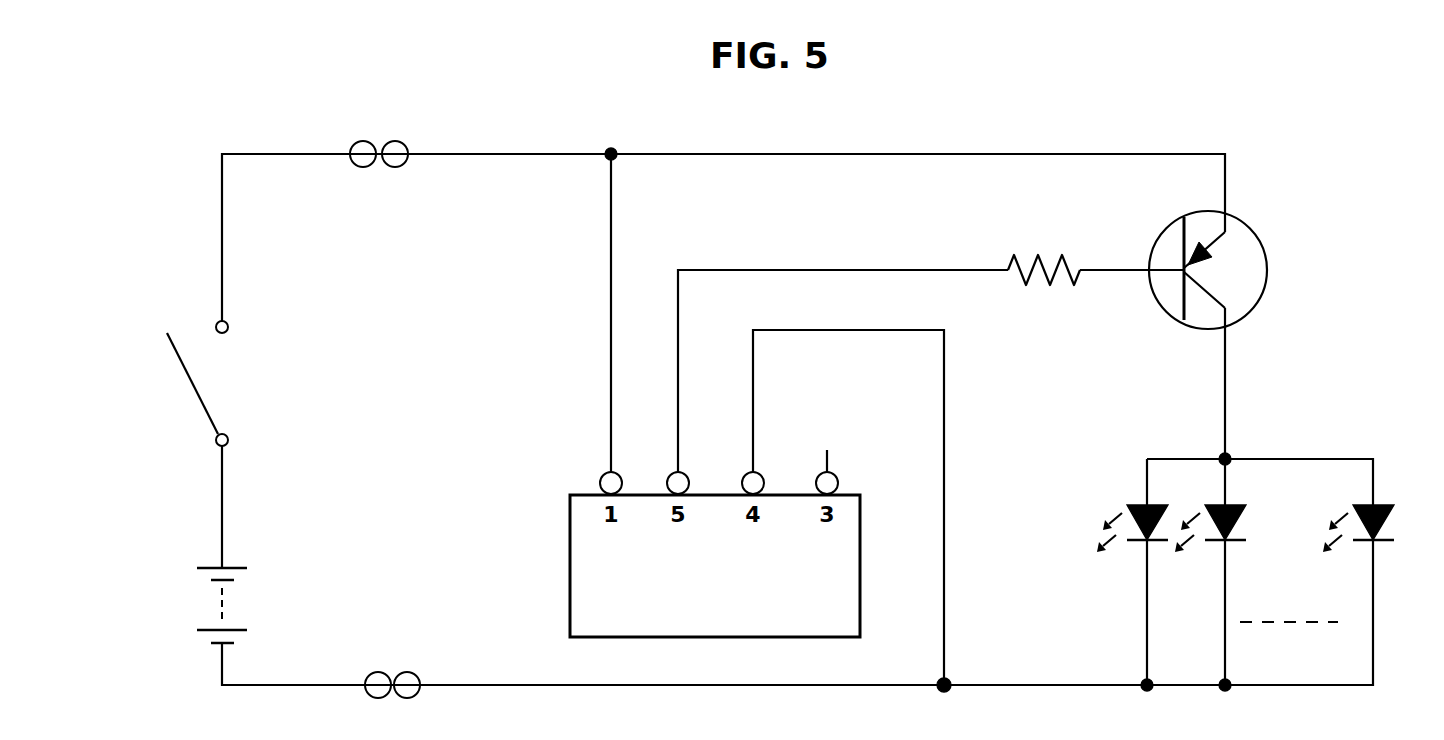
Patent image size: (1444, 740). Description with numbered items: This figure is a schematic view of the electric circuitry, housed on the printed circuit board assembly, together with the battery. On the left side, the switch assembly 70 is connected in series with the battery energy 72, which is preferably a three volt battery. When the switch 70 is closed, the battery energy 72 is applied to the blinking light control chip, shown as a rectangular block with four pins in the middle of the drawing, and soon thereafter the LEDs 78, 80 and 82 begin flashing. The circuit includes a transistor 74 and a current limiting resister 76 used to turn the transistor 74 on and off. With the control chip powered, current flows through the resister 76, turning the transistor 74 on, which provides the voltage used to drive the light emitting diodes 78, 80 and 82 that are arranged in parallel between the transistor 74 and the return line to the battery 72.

The switch assembly 70 is at (203, 383).
The battery energy 72 is at (248, 605).
The transistor 74 is at (1215, 294).
The current limiting resister 76 is at (1029, 268).
The LED 78 is at (1130, 557).
The LED 80 is at (1210, 557).
The LED 82 is at (1358, 557).